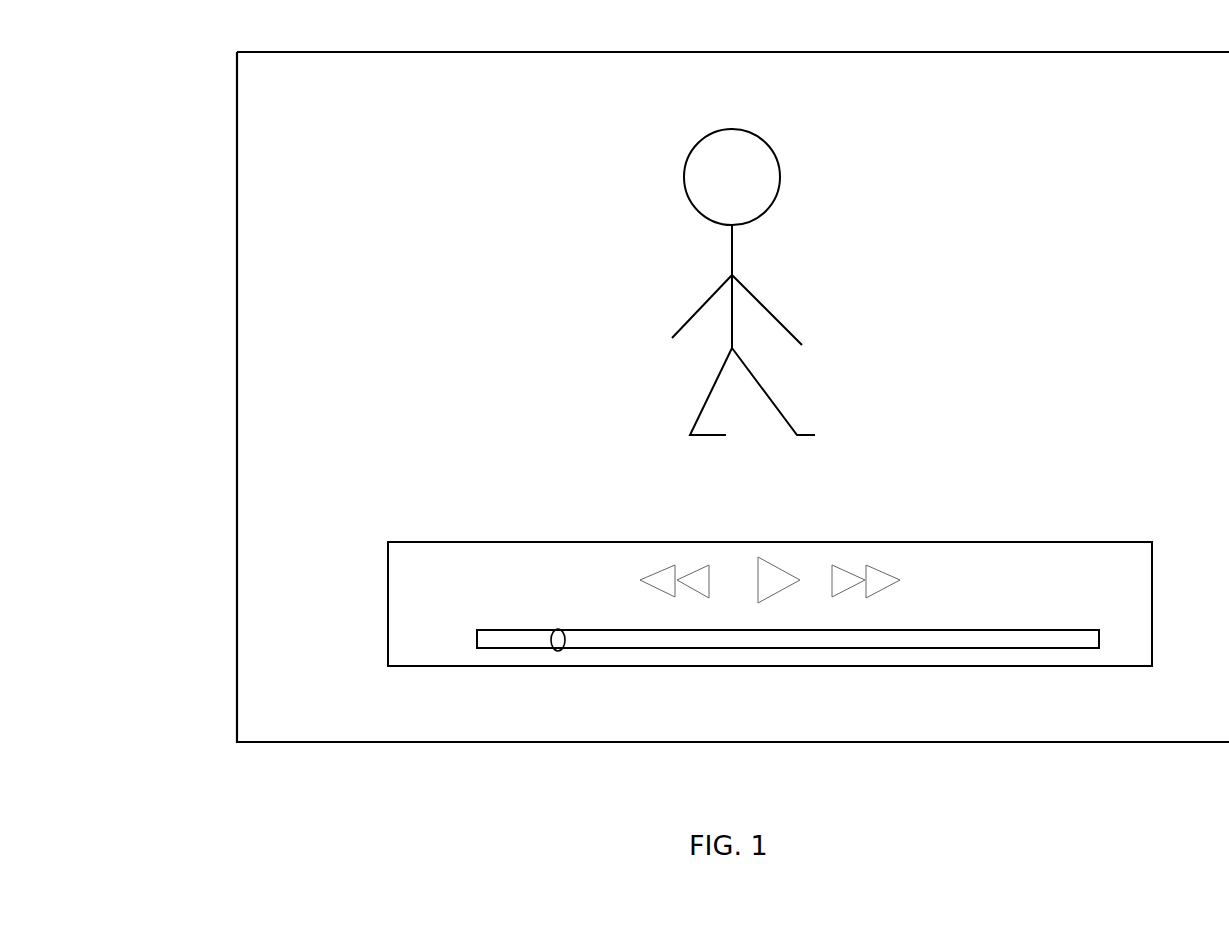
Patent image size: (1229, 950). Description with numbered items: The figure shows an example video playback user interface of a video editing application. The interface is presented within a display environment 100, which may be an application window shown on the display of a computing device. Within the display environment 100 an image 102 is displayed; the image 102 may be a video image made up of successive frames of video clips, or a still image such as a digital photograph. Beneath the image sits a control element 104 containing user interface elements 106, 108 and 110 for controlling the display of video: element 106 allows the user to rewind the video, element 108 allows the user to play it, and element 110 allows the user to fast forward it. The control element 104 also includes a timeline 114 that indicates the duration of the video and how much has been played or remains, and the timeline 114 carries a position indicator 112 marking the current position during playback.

The display environment 100 is at (192, 103).
The image 102 is at (550, 248).
The control element 104 is at (480, 514).
The user interface element 106 is at (694, 553).
The user interface element 108 is at (786, 550).
The user interface element 110 is at (860, 551).
The position indicator 112 is at (558, 668).
The timeline 114 is at (1118, 638).